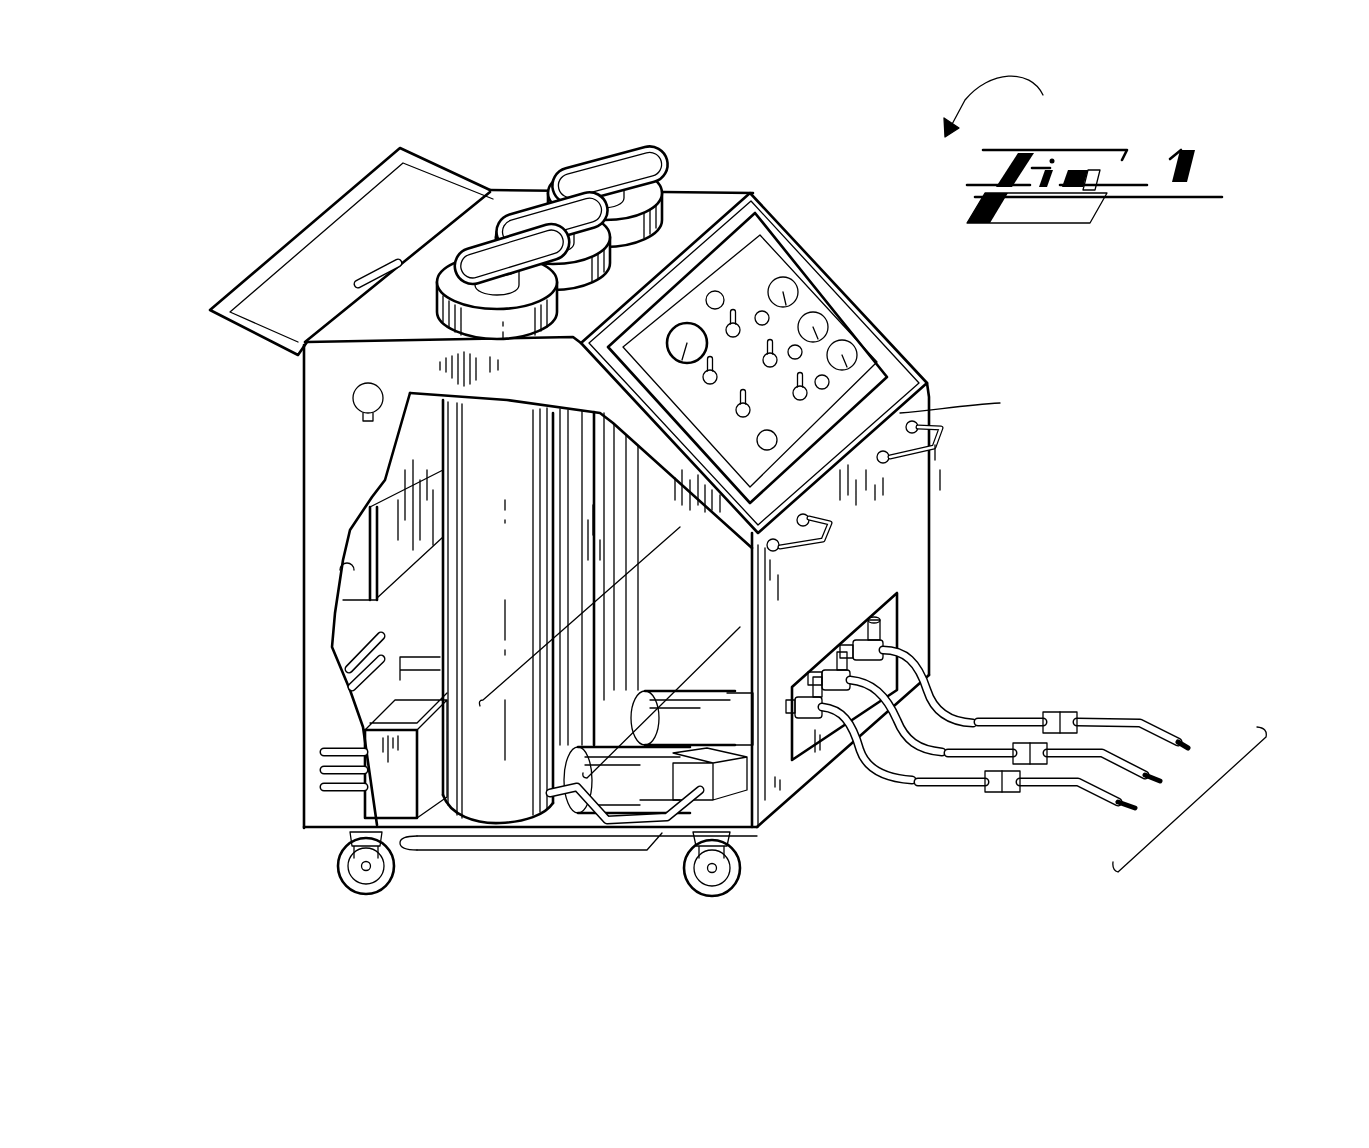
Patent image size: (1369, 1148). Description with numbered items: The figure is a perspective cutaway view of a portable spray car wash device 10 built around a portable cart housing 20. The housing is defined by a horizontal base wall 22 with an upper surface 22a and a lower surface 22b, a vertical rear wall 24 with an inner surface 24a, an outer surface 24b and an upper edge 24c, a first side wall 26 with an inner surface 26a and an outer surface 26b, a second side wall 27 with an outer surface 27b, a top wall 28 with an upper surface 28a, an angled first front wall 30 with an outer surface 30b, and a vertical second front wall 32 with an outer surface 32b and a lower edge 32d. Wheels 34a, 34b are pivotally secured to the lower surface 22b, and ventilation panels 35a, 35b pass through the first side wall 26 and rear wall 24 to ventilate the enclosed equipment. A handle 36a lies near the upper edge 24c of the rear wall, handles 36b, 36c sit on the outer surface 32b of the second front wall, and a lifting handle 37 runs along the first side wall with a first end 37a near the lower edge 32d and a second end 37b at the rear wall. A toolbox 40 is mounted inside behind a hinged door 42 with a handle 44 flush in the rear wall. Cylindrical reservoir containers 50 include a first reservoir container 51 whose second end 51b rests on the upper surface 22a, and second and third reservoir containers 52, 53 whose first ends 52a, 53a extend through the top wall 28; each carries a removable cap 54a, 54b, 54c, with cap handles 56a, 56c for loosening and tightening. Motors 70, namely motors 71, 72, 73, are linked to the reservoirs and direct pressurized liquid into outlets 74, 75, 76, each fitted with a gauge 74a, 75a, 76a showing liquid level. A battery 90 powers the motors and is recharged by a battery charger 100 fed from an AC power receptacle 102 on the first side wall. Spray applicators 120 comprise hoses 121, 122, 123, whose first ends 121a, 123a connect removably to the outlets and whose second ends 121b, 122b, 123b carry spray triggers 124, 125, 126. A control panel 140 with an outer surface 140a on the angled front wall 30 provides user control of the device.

The portable spray car wash device 10 is at (1007, 106).
The portable cart housing 20 is at (356, 372).
The base wall 22 is at (743, 833).
The upper surface of base wall 22a is at (585, 835).
The lower surface of base wall 22b is at (310, 830).
The rear wall 24 is at (350, 630).
The inner surface of rear wall 24a is at (340, 625).
The outer surface of rear wall 24b is at (303, 537).
The upper edge of rear wall 24c is at (332, 325).
The first side wall 26 is at (317, 430).
The inner surface of first side wall 26a is at (347, 563).
The outer surface of first side wall 26b is at (327, 457).
The second side wall 27 is at (928, 375).
The outer surface of second side wall 27b is at (900, 345).
The top wall 28 is at (497, 210).
The upper surface of top wall 28a is at (467, 223).
The first front wall 30 is at (750, 192).
The outer surface of first front wall 30b is at (758, 203).
The second front wall 32 is at (835, 790).
The outer surface of second front wall 32b is at (917, 530).
The lower edge of second front wall 32d is at (797, 805).
The wheel 34a is at (363, 893).
The wheel 34b is at (710, 893).
The ventilation panel 35a is at (337, 787).
The ventilation panel 35b is at (350, 693).
The handle 36a is at (235, 322).
The handle 36b is at (807, 547).
The handle 36c is at (945, 426).
The handle 37 is at (653, 838).
The first end of handle 37a is at (657, 833).
The second end of handle 37b is at (427, 832).
The toolbox 40 is at (383, 517).
The door 42 is at (440, 226).
The handle of door 44 is at (387, 268).
The reservoir containers 50 is at (558, 592).
The first reservoir container 51 is at (470, 820).
The second end of first reservoir container 51b is at (510, 820).
The second reservoir container 52 is at (523, 210).
The first end of second reservoir container 52a is at (510, 212).
The third reservoir container 53 is at (655, 193).
The first end of third reservoir container 53a is at (658, 188).
The removable cap 54a is at (437, 293).
The removable cap 54b is at (577, 291).
The removable cap 54c is at (640, 178).
The handle of cap 56a is at (476, 268).
The handle of cap 56c is at (608, 172).
The motors 70 is at (630, 705).
The motor 71 is at (587, 820).
The motor 72 is at (647, 682).
The motor 73 is at (707, 645).
The outlet 74 is at (815, 735).
The gauge 74a is at (815, 680).
The outlet 75 is at (830, 655).
The gauge 75a is at (853, 643).
The outlet 76 is at (866, 638).
The gauge 76a is at (880, 613).
The battery 90 is at (360, 706).
The battery charger 100 is at (428, 640).
The AC power receptacle 102 is at (340, 390).
The spray applicators 120 is at (1210, 797).
The hose 121 is at (867, 780).
The first end of hose 121a is at (845, 775).
The second end of hose 121b is at (950, 788).
The hose 122 is at (960, 745).
The second end of hose 122b is at (1005, 720).
The hose 123 is at (963, 705).
The first end of hose 123a is at (897, 655).
The second end of hose 123b is at (1000, 763).
The spray trigger 124 is at (1053, 788).
The spray trigger 125 is at (1143, 780).
The spray trigger 126 is at (1192, 740).
The control panel 140 is at (762, 262).
The outer surface of control panel 140a is at (862, 365).